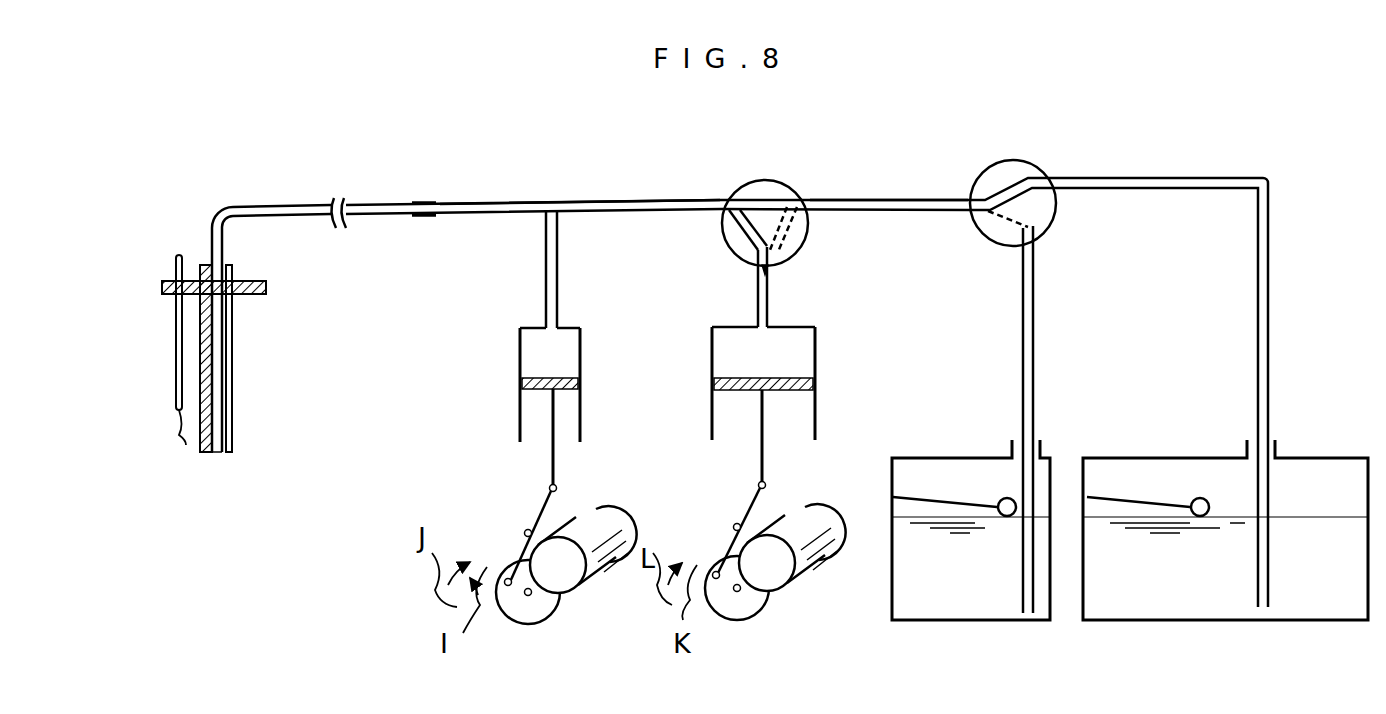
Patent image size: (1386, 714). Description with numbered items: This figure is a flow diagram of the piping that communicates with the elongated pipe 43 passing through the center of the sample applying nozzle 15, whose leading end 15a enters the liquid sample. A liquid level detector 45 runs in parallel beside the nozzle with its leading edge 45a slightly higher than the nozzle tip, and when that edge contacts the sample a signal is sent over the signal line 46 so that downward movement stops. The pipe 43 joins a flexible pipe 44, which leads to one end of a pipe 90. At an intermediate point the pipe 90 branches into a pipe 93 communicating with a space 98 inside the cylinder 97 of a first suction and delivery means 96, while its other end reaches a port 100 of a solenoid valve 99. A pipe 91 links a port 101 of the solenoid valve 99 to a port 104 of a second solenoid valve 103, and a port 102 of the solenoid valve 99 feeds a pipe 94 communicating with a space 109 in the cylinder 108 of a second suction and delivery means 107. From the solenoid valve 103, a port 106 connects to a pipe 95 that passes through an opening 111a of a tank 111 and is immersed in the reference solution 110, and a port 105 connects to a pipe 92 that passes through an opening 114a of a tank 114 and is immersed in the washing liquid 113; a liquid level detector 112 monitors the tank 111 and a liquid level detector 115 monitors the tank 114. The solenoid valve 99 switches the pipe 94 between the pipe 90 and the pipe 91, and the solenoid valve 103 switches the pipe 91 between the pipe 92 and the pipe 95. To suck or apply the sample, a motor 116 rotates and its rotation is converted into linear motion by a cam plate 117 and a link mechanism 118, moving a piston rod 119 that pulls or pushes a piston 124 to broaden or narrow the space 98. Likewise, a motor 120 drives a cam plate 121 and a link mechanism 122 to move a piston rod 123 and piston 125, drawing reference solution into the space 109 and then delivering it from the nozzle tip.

The sample applying nozzle 15 is at (234, 380).
The leading end of the sample applying nozzle 15a is at (222, 452).
The elongated pipe 43 is at (234, 335).
The flexible pipe 44 is at (370, 205).
The liquid level detector 45 is at (176, 338).
The leading edge of the liquid level detector 45a is at (158, 443).
The signal line 46 is at (181, 253).
The pipe 90 is at (518, 200).
The pipe 91 is at (872, 203).
The pipe 92 is at (1270, 260).
The pipe 93 is at (558, 270).
The pipe 94 is at (757, 290).
The pipe 95 is at (1036, 360).
The suction and delivery means 96 is at (503, 423).
The cylinder 97 is at (520, 345).
The space 98 is at (565, 350).
The solenoid valve 99 is at (778, 172).
The port 100 is at (722, 203).
The port 101 is at (808, 203).
The port 102 is at (765, 272).
The solenoid valve 103 is at (1042, 150).
The port 104 is at (960, 208).
The port 105 is at (1053, 180).
The port 106 is at (1038, 250).
The suction and delivery means 107 is at (698, 423).
The cylinder 108 is at (712, 345).
The space 109 is at (800, 345).
The reference solution 110 is at (935, 590).
The tank 111 is at (905, 458).
The opening of the tank 111a is at (1040, 450).
The liquid level detector 112 is at (960, 507).
The washing liquid 113 is at (1135, 590).
The tank 114 is at (1130, 458).
The opening of the tank 114a is at (1275, 450).
The liquid level detector 115 is at (1165, 500).
The motor 116 is at (592, 590).
The cam plate 117 is at (538, 614).
The link mechanism 118 is at (535, 510).
The piston rod 119 is at (556, 450).
The motor 120 is at (818, 585).
The cam plate 121 is at (746, 610).
The link mechanism 122 is at (745, 505).
The piston rod 123 is at (765, 468).
The piston 124 is at (565, 385).
The piston 125 is at (790, 385).